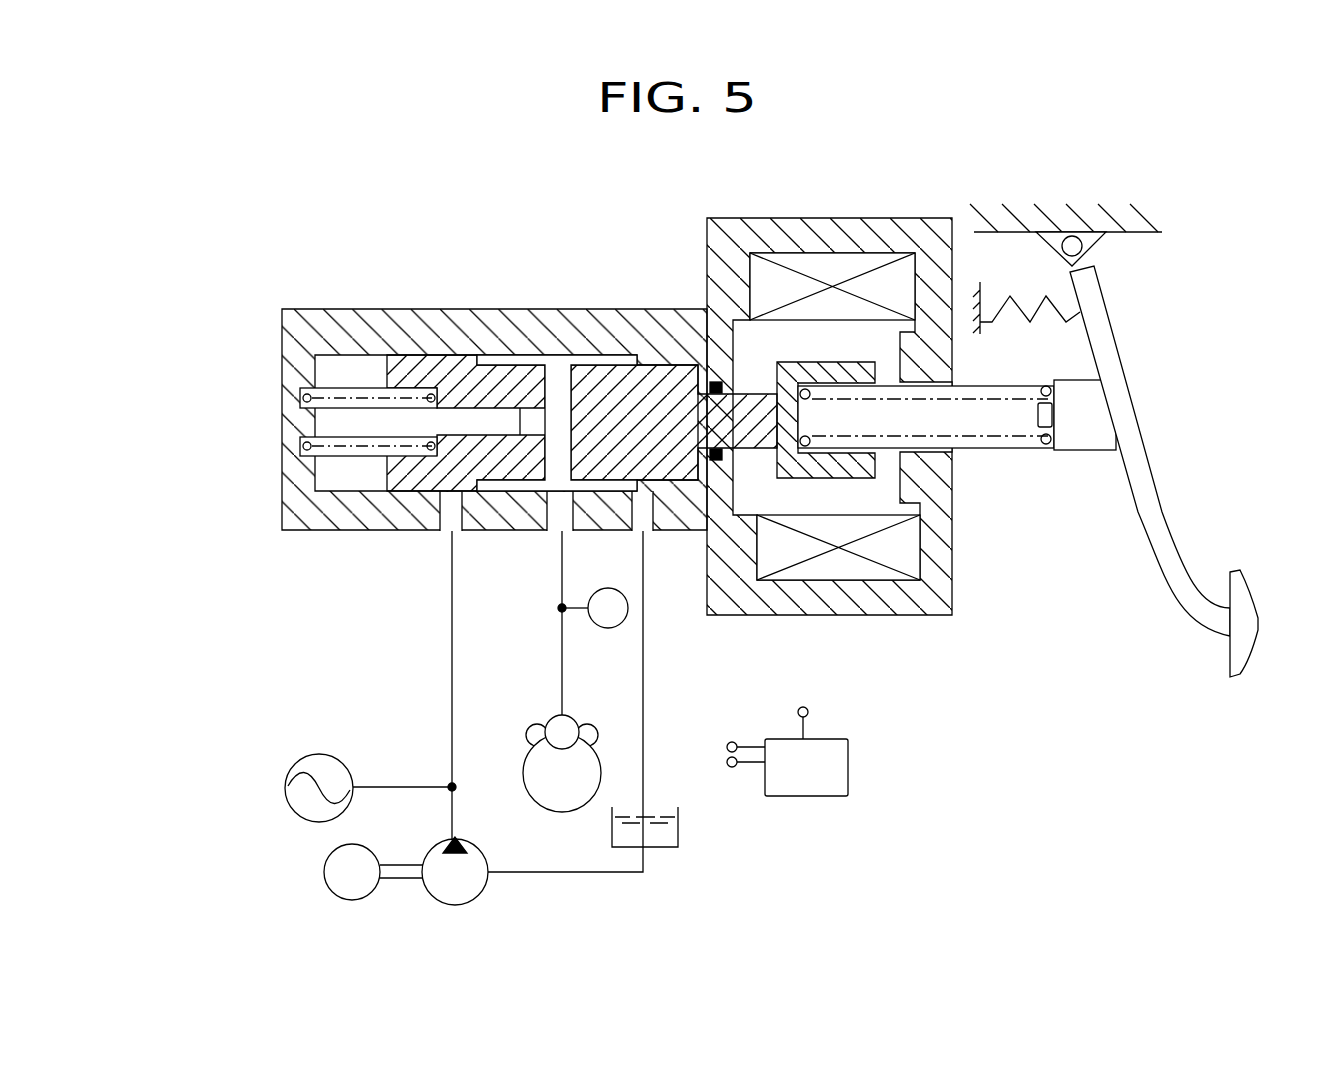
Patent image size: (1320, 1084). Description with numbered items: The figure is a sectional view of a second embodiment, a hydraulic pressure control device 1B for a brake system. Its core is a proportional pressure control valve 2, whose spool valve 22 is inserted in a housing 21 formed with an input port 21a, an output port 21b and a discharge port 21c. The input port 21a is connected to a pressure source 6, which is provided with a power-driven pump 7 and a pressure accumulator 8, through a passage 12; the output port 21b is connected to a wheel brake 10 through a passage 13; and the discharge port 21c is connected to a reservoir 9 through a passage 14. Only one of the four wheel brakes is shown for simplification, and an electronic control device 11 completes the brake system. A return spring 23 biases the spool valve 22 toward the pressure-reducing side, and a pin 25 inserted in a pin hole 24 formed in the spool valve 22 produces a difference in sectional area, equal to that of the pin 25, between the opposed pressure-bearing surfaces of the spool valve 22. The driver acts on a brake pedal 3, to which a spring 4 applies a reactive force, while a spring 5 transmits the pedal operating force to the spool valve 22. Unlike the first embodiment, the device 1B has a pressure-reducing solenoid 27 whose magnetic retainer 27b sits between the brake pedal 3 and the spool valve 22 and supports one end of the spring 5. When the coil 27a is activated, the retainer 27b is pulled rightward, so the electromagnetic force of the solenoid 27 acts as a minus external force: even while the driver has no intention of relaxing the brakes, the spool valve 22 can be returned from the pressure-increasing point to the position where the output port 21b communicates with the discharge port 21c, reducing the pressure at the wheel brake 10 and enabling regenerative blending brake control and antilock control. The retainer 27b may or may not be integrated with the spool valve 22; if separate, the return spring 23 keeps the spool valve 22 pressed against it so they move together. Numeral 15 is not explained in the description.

The hydraulic pressure control device 1B is at (478, 275).
The proportional pressure control valve 2 is at (385, 309).
The brake pedal 3 is at (1154, 518).
The spring 4 is at (1000, 290).
The spring 5 is at (1018, 440).
The pressure source 6 is at (383, 906).
The power-driven pump 7 is at (475, 903).
The pressure accumulator 8 is at (292, 782).
The reservoir 9 is at (682, 840).
The wheel brake 10 is at (522, 758).
The electronic control device 11 is at (783, 782).
The passage 12 is at (452, 645).
The passage 13 is at (562, 645).
The passage 14 is at (643, 725).
The pressure sensor 15 is at (618, 632).
The housing 21 is at (311, 523).
The input port 21a is at (446, 518).
The output port 21b is at (556, 515).
The discharge port 21c is at (650, 518).
The spool valve 22 is at (595, 375).
The return spring 23 is at (300, 390).
The pin hole 24 is at (535, 411).
The pin 25 is at (455, 412).
The pressure-reducing solenoid 27 is at (811, 253).
The coil 27a is at (857, 267).
The magnetic retainer 27b is at (707, 307).